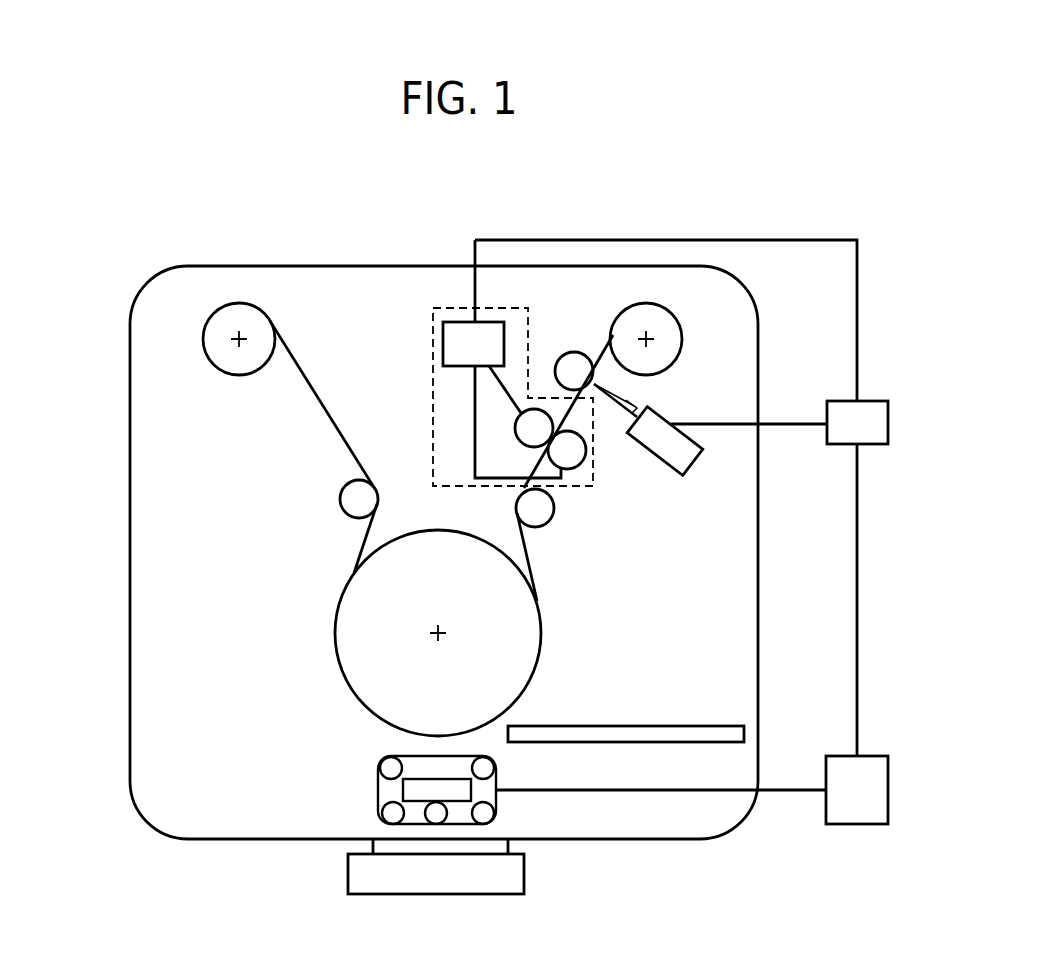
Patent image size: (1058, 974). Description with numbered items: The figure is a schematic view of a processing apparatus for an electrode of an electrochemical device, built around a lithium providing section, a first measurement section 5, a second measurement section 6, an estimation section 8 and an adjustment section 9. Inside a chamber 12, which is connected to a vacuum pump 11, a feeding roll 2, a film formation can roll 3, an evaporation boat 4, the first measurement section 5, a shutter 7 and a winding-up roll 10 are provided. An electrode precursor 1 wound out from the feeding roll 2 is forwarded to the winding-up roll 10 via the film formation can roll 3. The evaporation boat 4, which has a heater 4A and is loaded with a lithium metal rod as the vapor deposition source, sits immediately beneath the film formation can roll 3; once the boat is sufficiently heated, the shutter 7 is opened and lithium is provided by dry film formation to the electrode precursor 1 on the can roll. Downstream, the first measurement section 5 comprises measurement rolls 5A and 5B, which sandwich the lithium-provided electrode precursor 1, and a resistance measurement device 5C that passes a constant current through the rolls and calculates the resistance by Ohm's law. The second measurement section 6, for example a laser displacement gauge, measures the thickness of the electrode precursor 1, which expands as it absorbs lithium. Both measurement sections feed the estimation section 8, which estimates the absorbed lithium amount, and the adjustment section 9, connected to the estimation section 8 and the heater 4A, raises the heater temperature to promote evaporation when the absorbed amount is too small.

The electrode precursor 1 is at (322, 405).
The feeding roll 2 is at (203, 330).
The film formation can roll 3 is at (336, 653).
The evaporation boat 4 is at (387, 790).
The heater 4A is at (388, 763).
The first measurement section 5 is at (450, 306).
The measurement roll 5A is at (577, 470).
The measurement roll 5B is at (515, 425).
The resistance measurement device 5C is at (441, 326).
The second measurement section 6 is at (692, 463).
The shutter 7 is at (743, 731).
The estimation section 8 is at (887, 421).
The adjustment section 9 is at (855, 823).
The winding-up roll 10 is at (681, 338).
The vacuum pump 11 is at (460, 894).
The chamber 12 is at (758, 460).